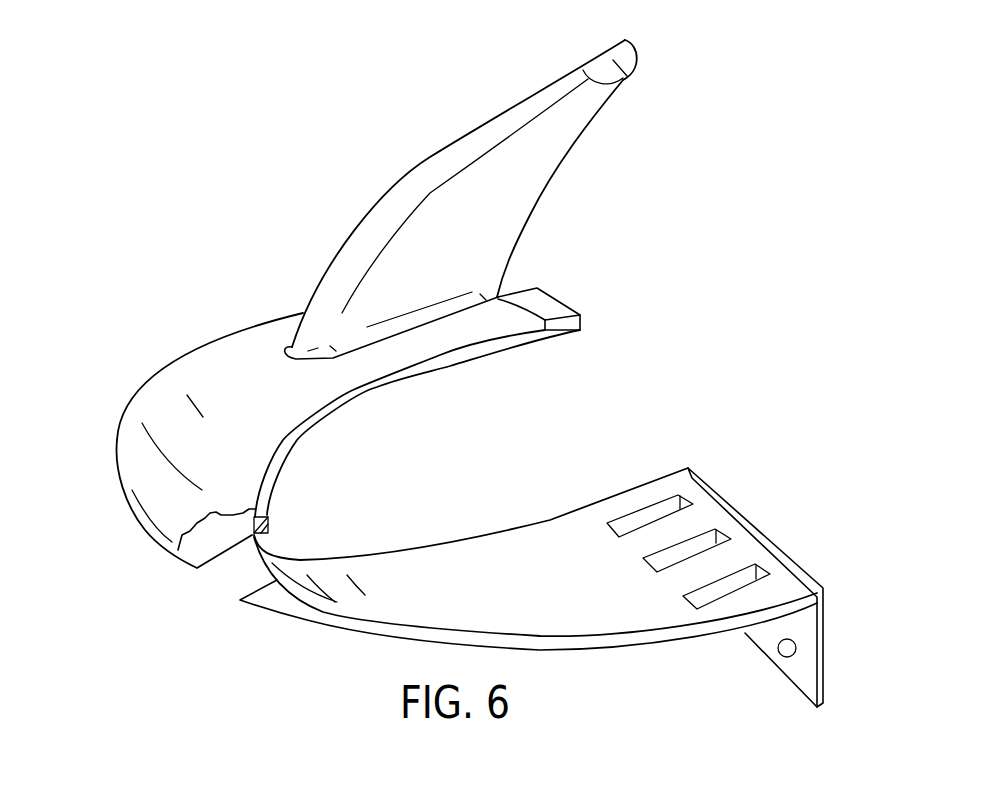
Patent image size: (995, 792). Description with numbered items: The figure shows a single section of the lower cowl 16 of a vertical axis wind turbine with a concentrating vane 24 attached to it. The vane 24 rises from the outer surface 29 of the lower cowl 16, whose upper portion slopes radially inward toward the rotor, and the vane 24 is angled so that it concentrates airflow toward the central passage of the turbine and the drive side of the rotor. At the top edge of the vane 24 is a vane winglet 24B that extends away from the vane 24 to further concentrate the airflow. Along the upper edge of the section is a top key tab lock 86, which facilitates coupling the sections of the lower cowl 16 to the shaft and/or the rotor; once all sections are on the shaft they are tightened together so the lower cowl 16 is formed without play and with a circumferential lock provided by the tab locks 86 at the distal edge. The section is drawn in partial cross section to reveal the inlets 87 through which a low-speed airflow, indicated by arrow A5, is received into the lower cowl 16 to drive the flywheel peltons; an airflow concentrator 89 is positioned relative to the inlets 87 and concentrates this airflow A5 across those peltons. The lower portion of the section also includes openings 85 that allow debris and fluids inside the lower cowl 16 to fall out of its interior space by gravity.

The lower cowl 16 is at (132, 365).
The vane 24 is at (387, 212).
The winglet 24B is at (628, 76).
The outer surface 29 is at (162, 407).
The top key tab lock 86 is at (548, 306).
The airflow concentrator 89 is at (266, 514).
The inlet 87 is at (227, 590).
The opening 85 is at (673, 493).
The low-speed airflow arrow A5 is at (228, 572).